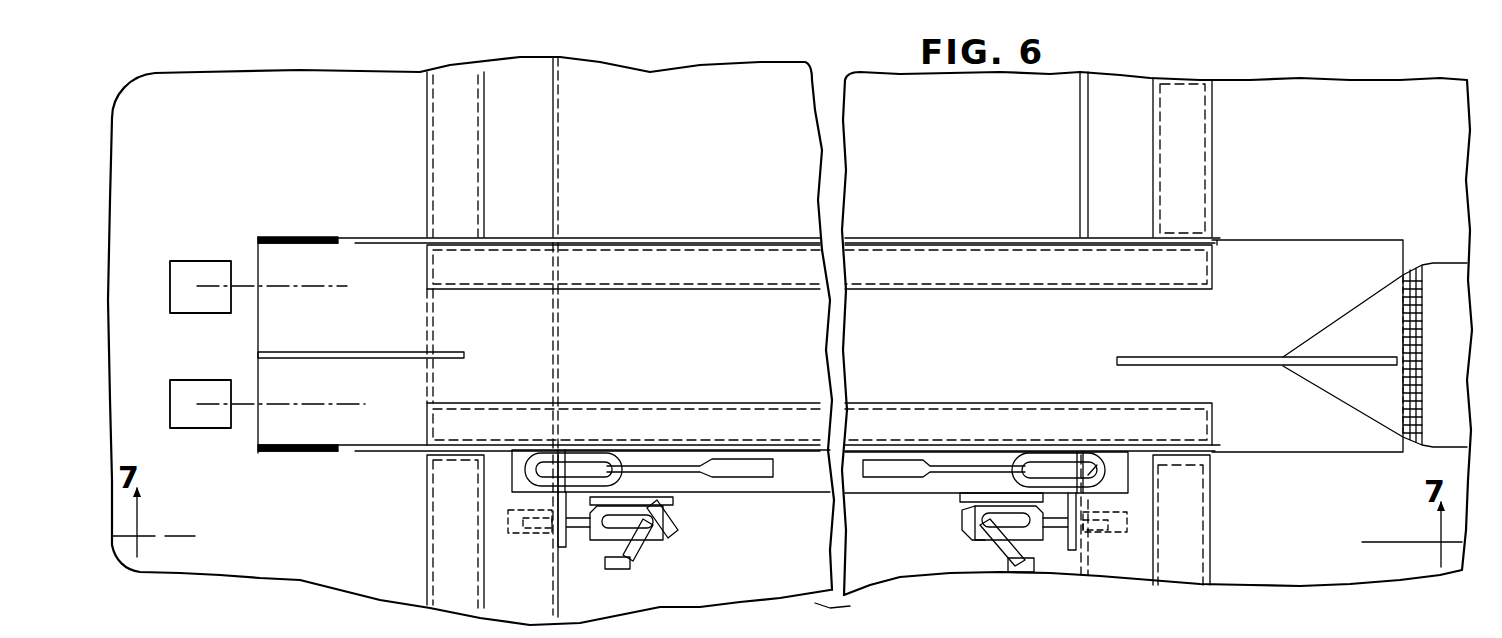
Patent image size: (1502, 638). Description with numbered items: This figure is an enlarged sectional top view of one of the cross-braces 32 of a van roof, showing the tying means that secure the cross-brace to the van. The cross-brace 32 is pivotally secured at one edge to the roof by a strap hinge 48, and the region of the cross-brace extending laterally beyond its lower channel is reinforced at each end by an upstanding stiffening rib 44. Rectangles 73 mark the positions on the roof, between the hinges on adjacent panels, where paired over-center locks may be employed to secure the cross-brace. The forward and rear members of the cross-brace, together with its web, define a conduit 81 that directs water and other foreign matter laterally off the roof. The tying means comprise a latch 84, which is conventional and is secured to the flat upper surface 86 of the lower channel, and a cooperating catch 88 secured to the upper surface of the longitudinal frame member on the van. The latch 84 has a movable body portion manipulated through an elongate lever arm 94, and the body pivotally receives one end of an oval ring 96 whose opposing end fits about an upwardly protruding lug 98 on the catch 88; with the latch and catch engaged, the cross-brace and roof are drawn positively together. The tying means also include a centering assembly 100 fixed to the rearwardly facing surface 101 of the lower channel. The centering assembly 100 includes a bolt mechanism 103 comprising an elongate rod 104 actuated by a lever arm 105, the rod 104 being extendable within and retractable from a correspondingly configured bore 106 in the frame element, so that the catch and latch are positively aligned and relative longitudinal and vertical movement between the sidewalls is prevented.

The cross-brace 32 is at (1300, 270).
The stiffening rib 44 is at (338, 356).
The strap hinge 48 is at (1350, 340).
The rectangles 73 is at (196, 282).
The conduit 81 is at (1083, 352).
The latch 84 is at (603, 448).
The flat upper surface 86 is at (818, 473).
The catch 88 is at (1122, 478).
The elongate lever arm 94 is at (740, 467).
The oval ring 96 is at (612, 462).
The lug 98 is at (1103, 455).
The centering assembly 100 is at (676, 535).
The rearwardly facing surface 101 is at (878, 495).
The bolt mechanism 103 is at (665, 508).
The elongate rod 104 is at (578, 523).
The lever arm 105 is at (628, 563).
The bore 106 is at (1100, 527).